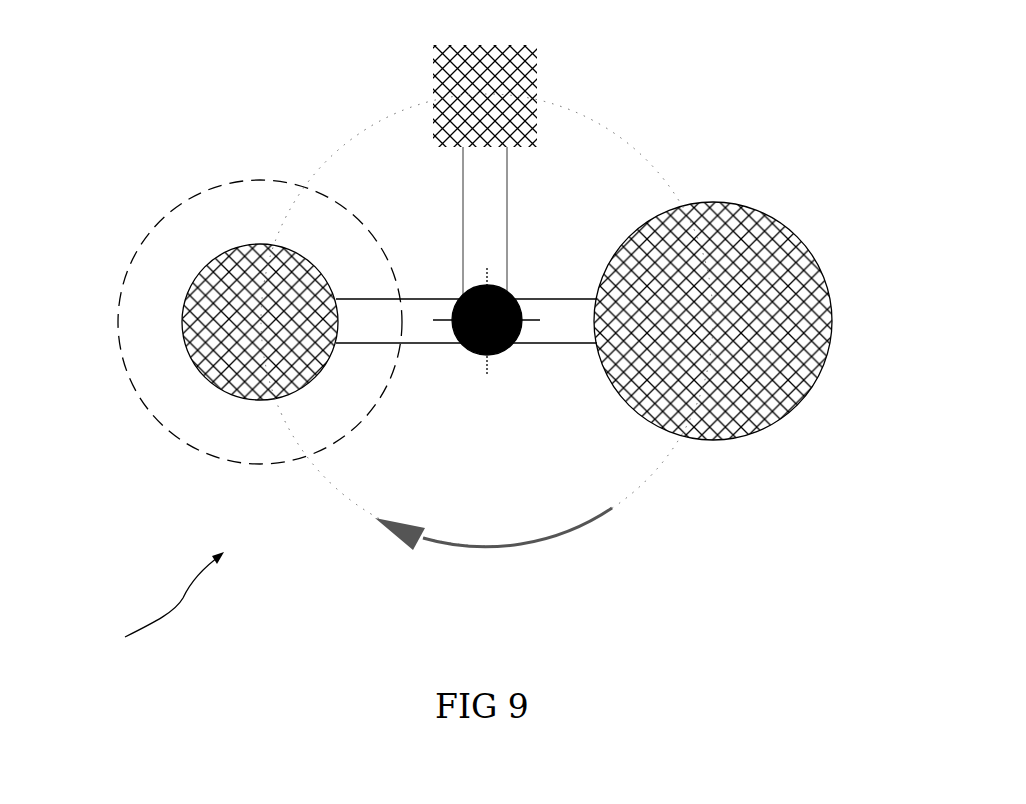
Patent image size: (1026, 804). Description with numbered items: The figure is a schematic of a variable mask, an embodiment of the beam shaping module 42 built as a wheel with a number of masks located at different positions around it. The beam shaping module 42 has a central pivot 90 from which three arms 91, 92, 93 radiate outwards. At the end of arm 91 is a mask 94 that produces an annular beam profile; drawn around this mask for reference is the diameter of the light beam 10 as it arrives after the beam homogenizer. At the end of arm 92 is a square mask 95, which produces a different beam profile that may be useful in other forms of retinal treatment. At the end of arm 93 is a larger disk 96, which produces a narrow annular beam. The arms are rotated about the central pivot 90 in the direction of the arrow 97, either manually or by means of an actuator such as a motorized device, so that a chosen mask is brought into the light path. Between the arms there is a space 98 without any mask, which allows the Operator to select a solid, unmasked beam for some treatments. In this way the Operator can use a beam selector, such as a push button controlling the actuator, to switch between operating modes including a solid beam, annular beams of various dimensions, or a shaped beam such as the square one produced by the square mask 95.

The light beam 10 is at (163, 221).
The beam shaping module 42 is at (159, 608).
The central pivot 90 is at (507, 350).
The arm 91 is at (423, 299).
The arm 92 is at (507, 223).
The arm 93 is at (540, 299).
The mask 94 is at (205, 368).
The square mask 95 is at (537, 77).
The larger disk 96 is at (743, 433).
The arrow 97 is at (422, 535).
The space 98 is at (487, 320).